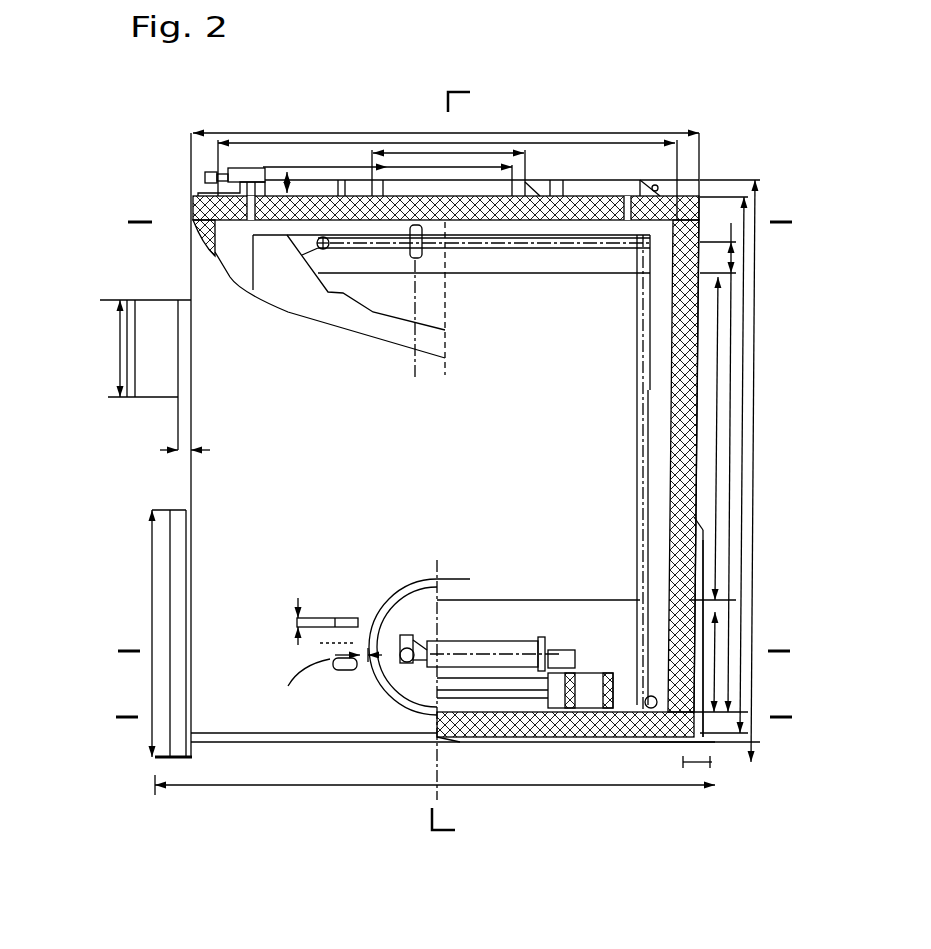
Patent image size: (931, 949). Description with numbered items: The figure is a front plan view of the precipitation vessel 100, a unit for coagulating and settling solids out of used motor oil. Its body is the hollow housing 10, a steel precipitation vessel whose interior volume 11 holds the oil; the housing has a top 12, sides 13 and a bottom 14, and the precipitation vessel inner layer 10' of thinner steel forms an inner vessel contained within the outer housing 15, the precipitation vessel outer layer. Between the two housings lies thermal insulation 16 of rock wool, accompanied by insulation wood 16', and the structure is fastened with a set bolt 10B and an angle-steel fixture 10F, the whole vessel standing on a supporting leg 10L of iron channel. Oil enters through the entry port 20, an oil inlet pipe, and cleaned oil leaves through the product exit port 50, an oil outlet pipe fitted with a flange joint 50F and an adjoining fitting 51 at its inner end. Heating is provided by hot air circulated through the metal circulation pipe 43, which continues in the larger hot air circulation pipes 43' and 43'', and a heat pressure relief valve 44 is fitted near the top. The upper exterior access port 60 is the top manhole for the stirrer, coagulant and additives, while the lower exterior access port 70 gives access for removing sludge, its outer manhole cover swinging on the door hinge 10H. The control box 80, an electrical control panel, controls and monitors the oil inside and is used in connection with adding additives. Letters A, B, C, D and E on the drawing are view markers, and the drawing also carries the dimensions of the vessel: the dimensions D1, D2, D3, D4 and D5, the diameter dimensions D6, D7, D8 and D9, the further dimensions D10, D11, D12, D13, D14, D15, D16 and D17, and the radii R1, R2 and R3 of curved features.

The precipitation vessel inner layer 10' is at (250, 445).
The top 12 is at (572, 220).
The upper exterior access port 60 is at (503, 128).
The heat pressure relief valve 44 is at (210, 177).
The thermal insulation 16 is at (188, 167).
The insulation wood 16' is at (506, 477).
The set bolt 10B is at (653, 220).
The sides 13 is at (754, 456).
The hollow housing 10 is at (715, 466).
The hot air circulation pipe 43 is at (724, 438).
The hot air circulation pipe 43' is at (740, 587).
The hot air circulation pipe 43'' is at (620, 763).
The interior volume 11 is at (548, 398).
The outer housing 15 is at (217, 298).
The entry port 20 is at (362, 197).
The control box 80 is at (120, 297).
The fixture 10F is at (112, 375).
The supporting leg 10L is at (178, 590).
The precipitation vessel 100 is at (262, 840).
The bottom 14 is at (497, 715).
The lower exterior access port 70 is at (418, 697).
The pivot fitting 51 is at (437, 647).
The product exit port 50 is at (450, 645).
The flange joint 50F is at (520, 648).
The door hinge 10H is at (377, 678).
The section line A is at (471, 98).
The section line B is at (457, 830).
The section line C is at (461, 222).
The section line D is at (455, 651).
The section line E is at (454, 717).
The dimension D1 is at (362, 786).
The dimension D2 is at (150, 606).
The dimension D3 is at (204, 469).
The dimension D4 is at (118, 356).
The dimension D5 is at (316, 142).
The dimension D6 is at (363, 133).
The dimension D7 is at (378, 143).
The dimension D8 is at (426, 153).
The dimension D9 is at (505, 165).
The dimension D10 is at (735, 257).
The dimension D11 is at (735, 300).
The dimension D12 is at (742, 357).
The dimension D13 is at (740, 410).
The dimension D14 is at (752, 441).
The dimension D15 is at (716, 674).
The dimension D16 is at (293, 670).
The dimension D17 is at (251, 621).
The radius R1 is at (653, 187).
The radius R2 is at (377, 680).
The radius R3 is at (400, 604).